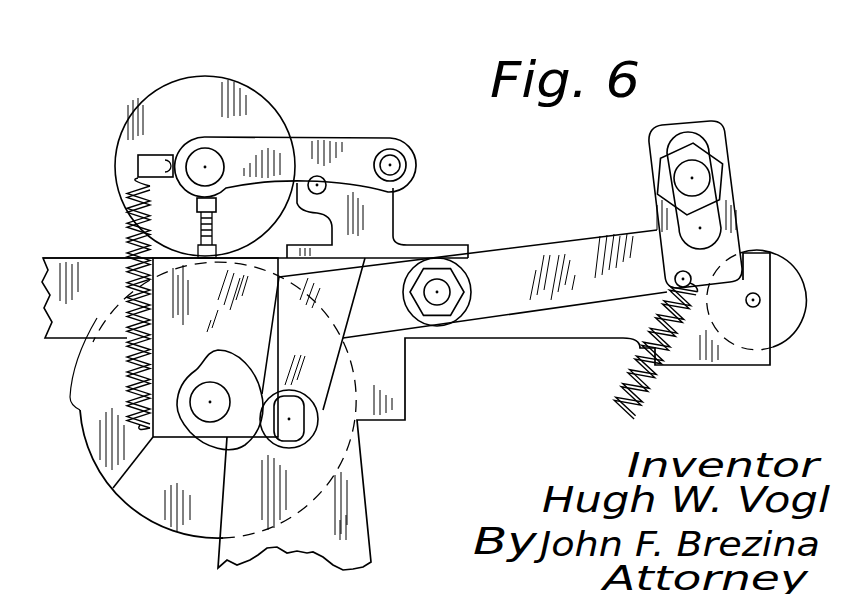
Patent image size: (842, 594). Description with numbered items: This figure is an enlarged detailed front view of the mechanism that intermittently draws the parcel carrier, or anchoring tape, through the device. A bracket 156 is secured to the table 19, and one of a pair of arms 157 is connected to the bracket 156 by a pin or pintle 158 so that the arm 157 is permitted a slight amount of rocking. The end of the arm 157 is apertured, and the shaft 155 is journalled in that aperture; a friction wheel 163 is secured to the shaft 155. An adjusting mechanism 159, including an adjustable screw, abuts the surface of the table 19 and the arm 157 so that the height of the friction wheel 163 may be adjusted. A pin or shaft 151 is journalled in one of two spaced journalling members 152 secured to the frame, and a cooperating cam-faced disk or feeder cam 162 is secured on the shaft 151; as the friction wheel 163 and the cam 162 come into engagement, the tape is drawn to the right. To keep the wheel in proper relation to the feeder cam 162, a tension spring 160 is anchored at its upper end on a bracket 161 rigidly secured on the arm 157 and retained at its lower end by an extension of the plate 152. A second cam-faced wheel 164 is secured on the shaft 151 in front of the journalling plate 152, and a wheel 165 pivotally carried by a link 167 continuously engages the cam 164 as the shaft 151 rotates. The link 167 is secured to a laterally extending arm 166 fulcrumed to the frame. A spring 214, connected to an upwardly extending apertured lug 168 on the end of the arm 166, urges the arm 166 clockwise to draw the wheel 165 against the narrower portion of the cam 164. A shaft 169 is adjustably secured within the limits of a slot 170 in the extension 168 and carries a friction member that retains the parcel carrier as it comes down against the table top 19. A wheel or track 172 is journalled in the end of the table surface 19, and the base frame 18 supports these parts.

The base frame 18 is at (355, 498).
The table 19 is at (90, 272).
The pin or shaft 151 is at (205, 420).
The journalling member 152 is at (113, 488).
The shaft 155 is at (207, 165).
The bracket 156 is at (372, 225).
The arm 157 is at (335, 138).
The pin or pintle 158 is at (391, 164).
The adjusting mechanism 159 is at (222, 210).
The tension spring 160 is at (130, 217).
The bracket 161 is at (122, 130).
The cam-faced disk 162 is at (143, 497).
The friction wheel 163 is at (173, 110).
The cam-faced wheel 164 is at (242, 349).
The wheel 165 is at (311, 424).
The arm 166 is at (517, 303).
The link 167 is at (317, 360).
The apertured lug 168 is at (723, 242).
The shaft 169 is at (694, 177).
The slot 170 is at (698, 143).
The wheel or track 172 is at (783, 327).
The spring 214 is at (640, 393).